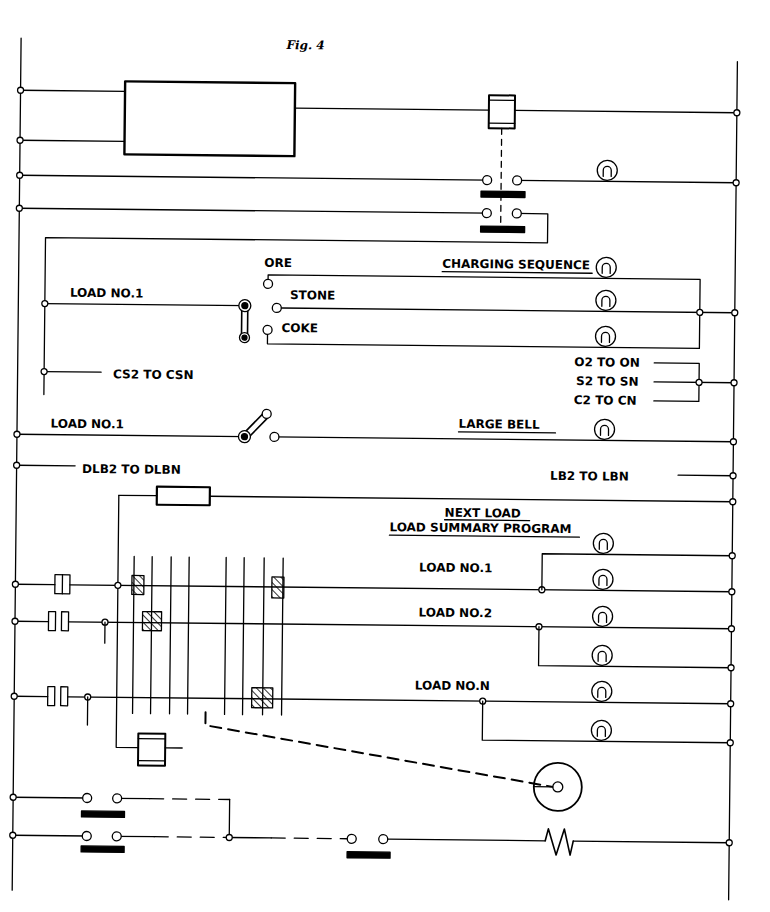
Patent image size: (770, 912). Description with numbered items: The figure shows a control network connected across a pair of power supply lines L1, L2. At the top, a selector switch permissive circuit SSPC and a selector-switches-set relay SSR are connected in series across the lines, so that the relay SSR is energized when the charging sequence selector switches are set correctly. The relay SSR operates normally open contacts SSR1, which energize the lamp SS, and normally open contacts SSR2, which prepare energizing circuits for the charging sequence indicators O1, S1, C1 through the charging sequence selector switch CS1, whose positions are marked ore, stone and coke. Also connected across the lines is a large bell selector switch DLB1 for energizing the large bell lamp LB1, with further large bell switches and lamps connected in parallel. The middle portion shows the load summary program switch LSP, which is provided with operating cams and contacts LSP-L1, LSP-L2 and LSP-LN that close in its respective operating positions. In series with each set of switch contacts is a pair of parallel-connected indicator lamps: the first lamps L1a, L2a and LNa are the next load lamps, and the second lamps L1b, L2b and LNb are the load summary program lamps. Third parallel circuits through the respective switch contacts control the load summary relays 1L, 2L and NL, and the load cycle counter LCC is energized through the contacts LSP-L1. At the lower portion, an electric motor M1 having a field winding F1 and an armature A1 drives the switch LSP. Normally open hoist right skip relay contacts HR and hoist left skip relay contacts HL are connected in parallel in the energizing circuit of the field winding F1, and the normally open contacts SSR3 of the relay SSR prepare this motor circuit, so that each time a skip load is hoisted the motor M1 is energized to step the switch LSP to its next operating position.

The power supply line L1 is at (17, 52).
The power supply line L2 is at (733, 70).
The selector switch permissive circuit SSPC is at (291, 142).
The selector-switches-set relay SSR is at (512, 103).
The normally open contacts SSR1 is at (500, 178).
The normally open contacts SSR2 is at (503, 213).
The normally open contacts SSR3 is at (364, 836).
The lamp SS is at (613, 162).
The charging sequence selector switch CS1 is at (246, 294).
The charging sequence indicator O1 is at (612, 259).
The charging sequence indicator S1 is at (614, 296).
The charging sequence indicator C1 is at (614, 331).
The large bell selector switch DLB1 is at (244, 422).
The large bell lamp LB1 is at (614, 425).
The load cycle counter LCC is at (426, 498).
The load summary program switch LSP is at (265, 540).
The LSP switch contacts LSP-L1 is at (58, 578).
The LSP switch contacts LSP-L2 is at (60, 634).
The LSP switch contacts LSP-LN is at (56, 690).
The load summary relay 2L is at (91, 637).
The load summary relay NL is at (74, 720).
The load summary relay 1L is at (157, 750).
The next load lamp L1a is at (611, 535).
The load summary program lamp L1b is at (613, 573).
The next load lamp L2a is at (613, 610).
The load summary program lamp L2b is at (613, 649).
The next load lamp LNa is at (613, 685).
The load summary program lamp LNb is at (613, 724).
The hoist right skip relay contacts HR is at (105, 799).
The hoist left skip relay contacts HL is at (104, 834).
The armature A1 is at (580, 776).
The electric motor M1 is at (547, 818).
The field winding F1 is at (566, 830).